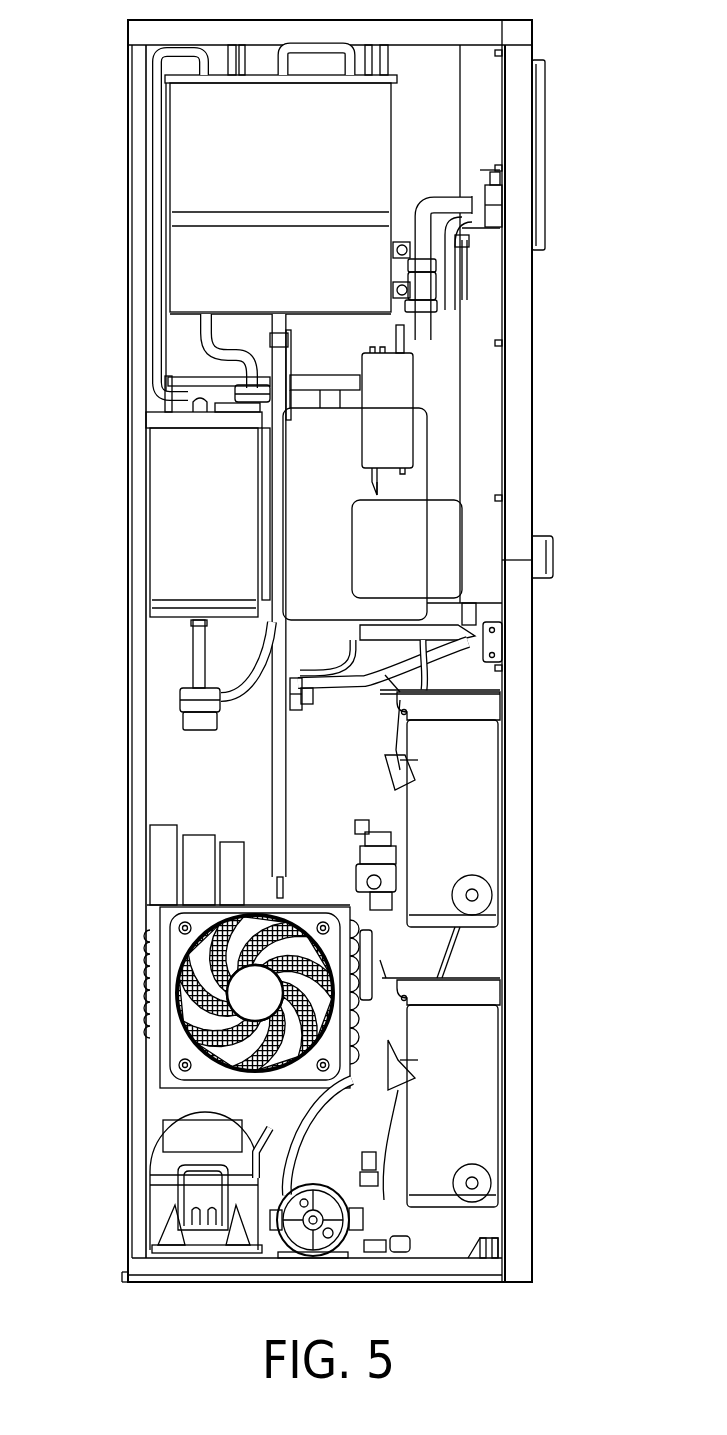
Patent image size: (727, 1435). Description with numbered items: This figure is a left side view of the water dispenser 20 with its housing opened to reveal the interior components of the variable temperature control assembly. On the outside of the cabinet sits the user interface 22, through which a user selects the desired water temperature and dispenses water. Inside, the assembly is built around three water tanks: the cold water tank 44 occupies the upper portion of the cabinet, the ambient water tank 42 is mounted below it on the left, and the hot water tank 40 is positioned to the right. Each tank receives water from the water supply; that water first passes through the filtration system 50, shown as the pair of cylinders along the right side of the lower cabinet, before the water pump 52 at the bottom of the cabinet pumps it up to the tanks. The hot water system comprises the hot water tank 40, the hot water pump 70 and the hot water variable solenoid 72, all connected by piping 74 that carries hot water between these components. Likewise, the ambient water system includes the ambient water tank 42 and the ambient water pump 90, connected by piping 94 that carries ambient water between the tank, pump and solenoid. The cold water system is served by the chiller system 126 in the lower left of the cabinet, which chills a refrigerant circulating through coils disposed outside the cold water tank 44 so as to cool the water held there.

The water dispenser 20 is at (594, 30).
The user interface 22 is at (560, 152).
The hot water tank 40 is at (412, 492).
The ambient water tank 42 is at (183, 508).
The cold water tank 44 is at (200, 138).
The filtration system 50 is at (543, 678).
The water pump 52 is at (298, 1260).
The hot water pump 70 is at (297, 708).
The hot water variable solenoid 72 is at (497, 166).
The piping 74 is at (447, 196).
The ambient water pump 90 is at (198, 731).
The piping 94 is at (245, 699).
The chiller system 126 is at (105, 900).